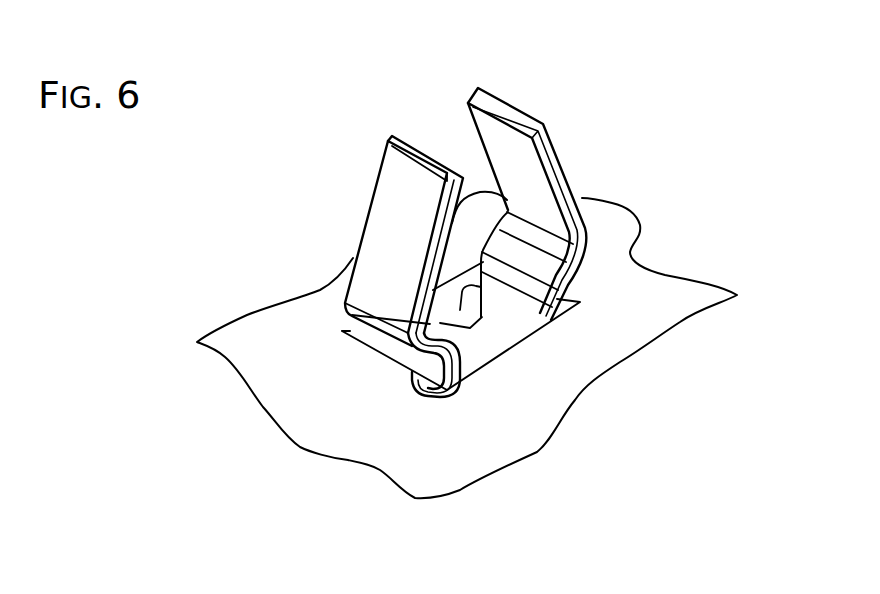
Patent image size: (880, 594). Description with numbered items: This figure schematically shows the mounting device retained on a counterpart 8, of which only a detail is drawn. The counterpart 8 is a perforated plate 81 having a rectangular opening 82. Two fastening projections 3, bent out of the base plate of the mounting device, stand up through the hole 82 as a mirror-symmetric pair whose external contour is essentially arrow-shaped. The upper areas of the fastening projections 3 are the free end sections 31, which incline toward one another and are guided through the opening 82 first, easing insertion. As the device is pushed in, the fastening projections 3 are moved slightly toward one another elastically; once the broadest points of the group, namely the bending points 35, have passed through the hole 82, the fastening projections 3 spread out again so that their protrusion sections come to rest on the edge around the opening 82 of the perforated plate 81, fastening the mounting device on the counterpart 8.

The fastening projections 3 is at (423, 209).
The free end sections 31 is at (377, 232).
The bending points 35 is at (343, 307).
The counterpart 8 is at (467, 316).
The perforated plate 81 is at (618, 338).
The rectangular opening 82 is at (478, 277).